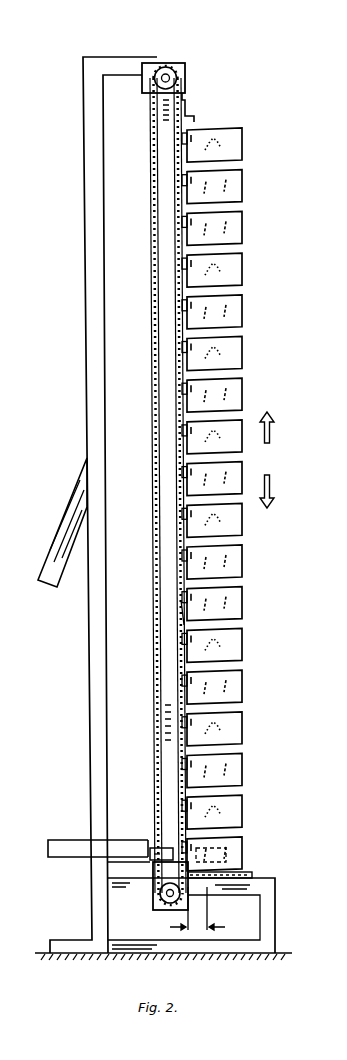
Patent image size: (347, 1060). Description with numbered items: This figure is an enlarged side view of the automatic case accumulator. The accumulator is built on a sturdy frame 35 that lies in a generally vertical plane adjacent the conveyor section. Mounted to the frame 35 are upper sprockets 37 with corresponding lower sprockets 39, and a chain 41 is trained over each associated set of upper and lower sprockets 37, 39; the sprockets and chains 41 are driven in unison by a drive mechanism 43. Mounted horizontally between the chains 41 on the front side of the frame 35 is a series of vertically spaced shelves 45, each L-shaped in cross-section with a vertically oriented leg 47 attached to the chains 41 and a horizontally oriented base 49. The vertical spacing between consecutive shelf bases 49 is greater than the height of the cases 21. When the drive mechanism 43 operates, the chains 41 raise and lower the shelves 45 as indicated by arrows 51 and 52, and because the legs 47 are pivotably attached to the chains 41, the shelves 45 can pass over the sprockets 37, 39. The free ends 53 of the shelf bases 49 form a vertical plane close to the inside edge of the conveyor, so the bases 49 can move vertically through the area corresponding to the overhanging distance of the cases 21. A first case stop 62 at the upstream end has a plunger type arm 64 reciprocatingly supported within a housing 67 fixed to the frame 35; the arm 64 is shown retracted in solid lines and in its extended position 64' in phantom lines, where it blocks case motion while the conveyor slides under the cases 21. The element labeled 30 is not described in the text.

The case 21 is at (265, 715).
The support platform 30 is at (250, 875).
The frame 35 is at (270, 932).
The upper sprocket 37 is at (170, 63).
The lower sprocket 39 is at (158, 888).
The chain 41 is at (153, 662).
The drive mechanism 43 is at (155, 905).
The shelf 45 is at (210, 590).
The vertically oriented leg 47 is at (182, 612).
The horizontally oriented base 49 is at (197, 662).
The arrow 51 is at (272, 426).
The arrow 52 is at (272, 480).
The free end 53 is at (207, 834).
The first case stop 62 is at (131, 840).
The plunger type arm 64 is at (115, 871).
The extended position of arm 64' is at (235, 854).
The housing 67 is at (150, 862).